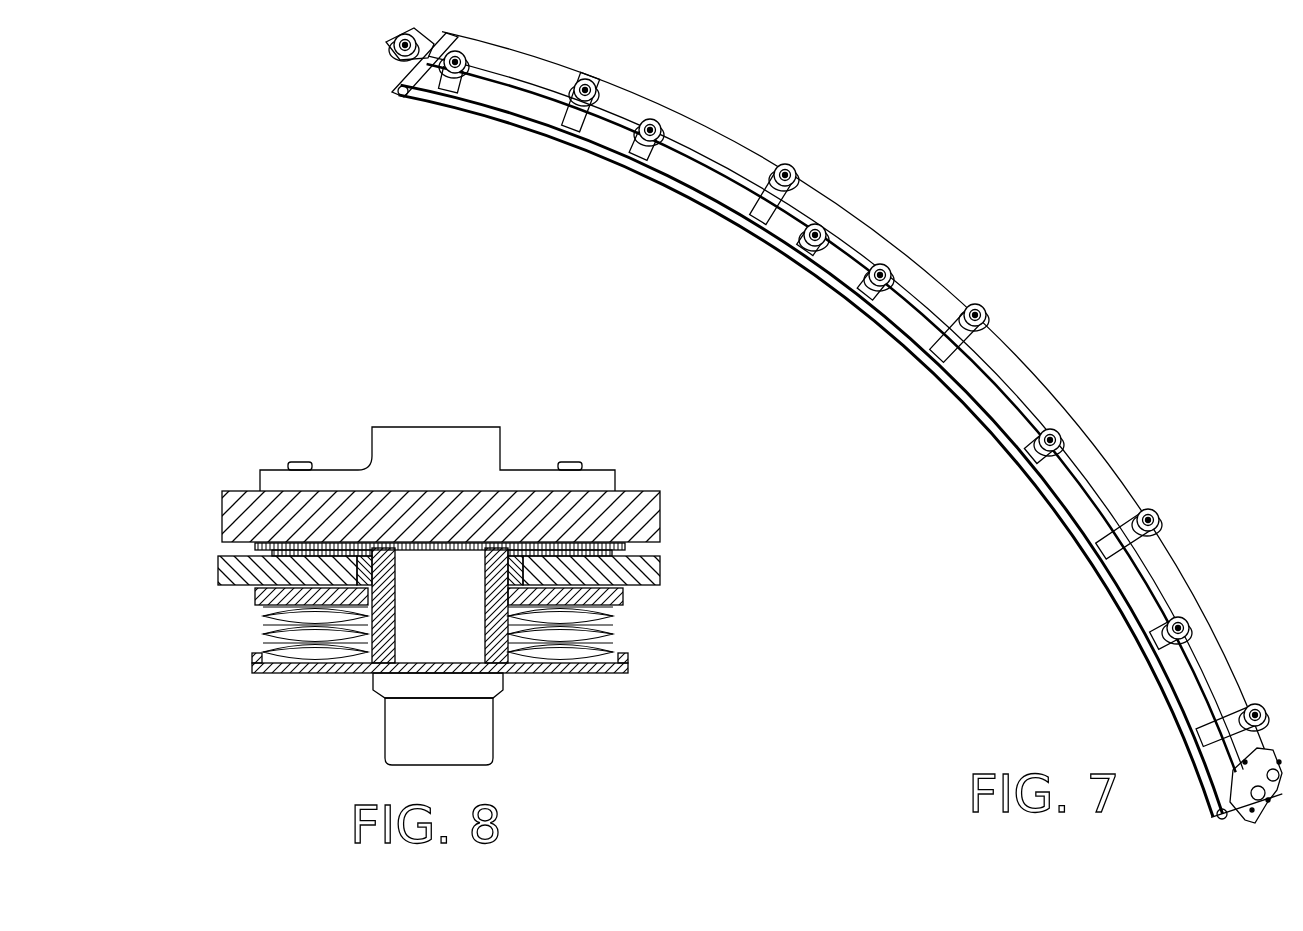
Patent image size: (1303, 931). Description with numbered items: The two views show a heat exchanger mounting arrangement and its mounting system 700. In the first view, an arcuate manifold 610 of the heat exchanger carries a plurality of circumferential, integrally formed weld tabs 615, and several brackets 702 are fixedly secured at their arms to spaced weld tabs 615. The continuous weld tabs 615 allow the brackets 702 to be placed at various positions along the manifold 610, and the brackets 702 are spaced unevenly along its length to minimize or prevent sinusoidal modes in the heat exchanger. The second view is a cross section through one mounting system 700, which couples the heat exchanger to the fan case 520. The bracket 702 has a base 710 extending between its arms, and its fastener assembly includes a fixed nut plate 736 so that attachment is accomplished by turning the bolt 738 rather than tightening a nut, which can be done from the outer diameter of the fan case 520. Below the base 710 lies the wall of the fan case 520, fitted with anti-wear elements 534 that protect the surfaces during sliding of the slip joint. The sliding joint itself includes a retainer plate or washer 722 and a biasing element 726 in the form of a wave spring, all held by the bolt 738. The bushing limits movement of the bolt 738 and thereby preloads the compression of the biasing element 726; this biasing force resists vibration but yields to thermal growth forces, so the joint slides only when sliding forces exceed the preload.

In FIG. 7, the manifold 610 is at (1097, 482).
In FIG. 7, the weld tabs 615 is at (628, 112).
In FIG. 7, the bracket 702 is at (950, 333).
In FIG. 8, the mounting system 700 is at (464, 564).
In FIG. 8, the base 710 is at (245, 503).
In FIG. 8, the fixed nut plate 736 is at (407, 437).
In FIG. 8, the anti-wear elements 534 is at (607, 608).
In FIG. 8, the fan case 520 is at (228, 566).
In FIG. 8, the retainer plate or washer 722 is at (268, 598).
In FIG. 8, the biasing element 726 is at (265, 634).
In FIG. 8, the bolt 738 is at (468, 728).